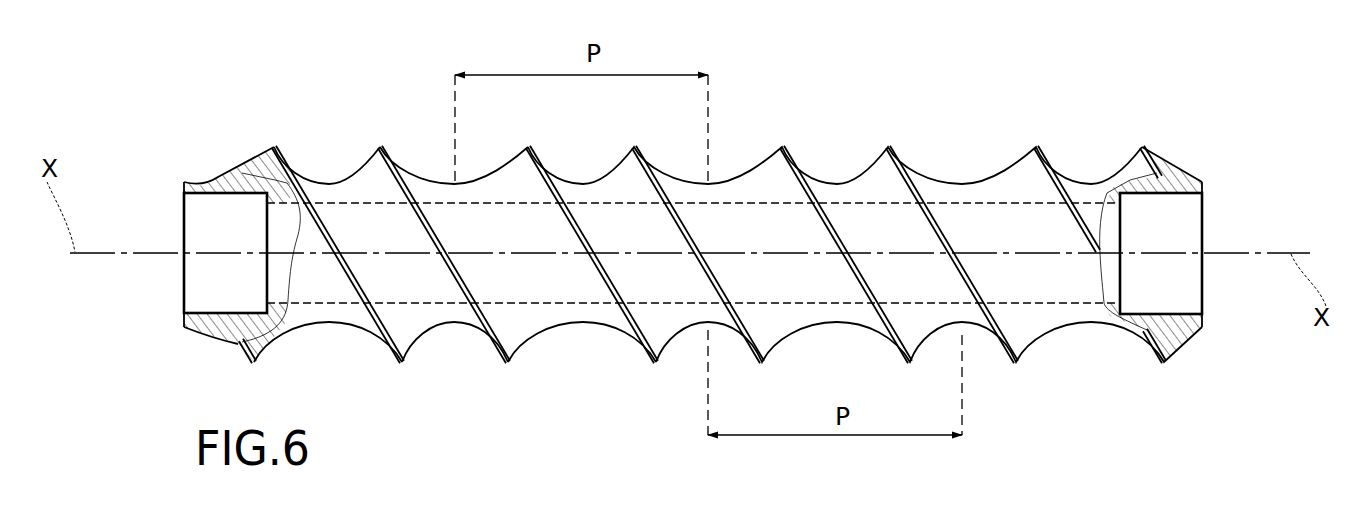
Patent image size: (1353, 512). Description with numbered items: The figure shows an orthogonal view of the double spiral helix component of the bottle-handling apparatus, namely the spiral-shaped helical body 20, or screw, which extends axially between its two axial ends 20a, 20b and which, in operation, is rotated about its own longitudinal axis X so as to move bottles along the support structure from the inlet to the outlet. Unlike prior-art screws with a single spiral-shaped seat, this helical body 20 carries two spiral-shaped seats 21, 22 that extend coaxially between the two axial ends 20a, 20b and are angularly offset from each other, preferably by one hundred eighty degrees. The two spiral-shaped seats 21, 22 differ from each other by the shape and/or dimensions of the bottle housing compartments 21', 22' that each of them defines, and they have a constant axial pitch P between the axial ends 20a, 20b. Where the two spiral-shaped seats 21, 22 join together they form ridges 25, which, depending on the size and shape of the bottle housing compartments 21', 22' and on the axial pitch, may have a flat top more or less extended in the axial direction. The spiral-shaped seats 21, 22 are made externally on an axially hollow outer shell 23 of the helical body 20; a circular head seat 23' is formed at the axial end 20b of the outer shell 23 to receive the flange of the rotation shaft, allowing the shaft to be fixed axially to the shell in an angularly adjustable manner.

The spiral-shaped helical body 20 is at (797, 125).
The axial end 20a is at (202, 167).
The axial end 20b is at (1196, 147).
The spiral-shaped seat 21 is at (449, 109).
The bottle housing compartment 21' is at (582, 375).
The spiral-shaped seat 22 is at (327, 122).
The bottle housing compartment 22' is at (455, 385).
The outer shell 23 is at (1163, 410).
The circular head seat 23' is at (1227, 242).
The ridges 25 is at (507, 362).